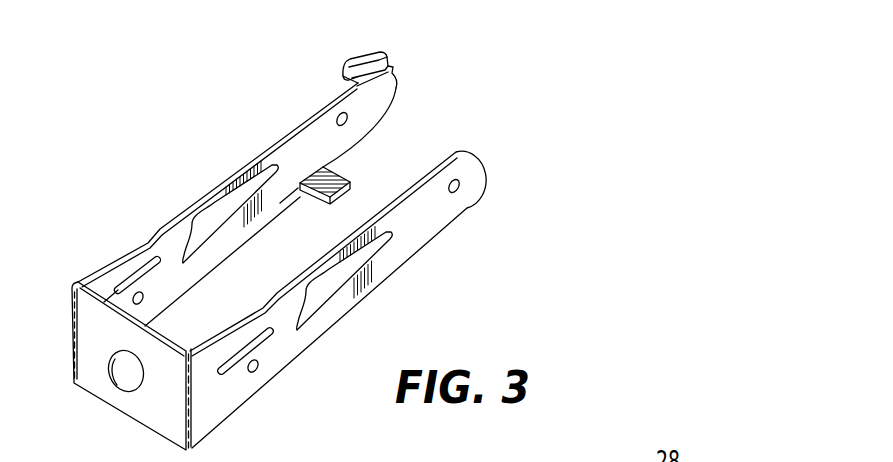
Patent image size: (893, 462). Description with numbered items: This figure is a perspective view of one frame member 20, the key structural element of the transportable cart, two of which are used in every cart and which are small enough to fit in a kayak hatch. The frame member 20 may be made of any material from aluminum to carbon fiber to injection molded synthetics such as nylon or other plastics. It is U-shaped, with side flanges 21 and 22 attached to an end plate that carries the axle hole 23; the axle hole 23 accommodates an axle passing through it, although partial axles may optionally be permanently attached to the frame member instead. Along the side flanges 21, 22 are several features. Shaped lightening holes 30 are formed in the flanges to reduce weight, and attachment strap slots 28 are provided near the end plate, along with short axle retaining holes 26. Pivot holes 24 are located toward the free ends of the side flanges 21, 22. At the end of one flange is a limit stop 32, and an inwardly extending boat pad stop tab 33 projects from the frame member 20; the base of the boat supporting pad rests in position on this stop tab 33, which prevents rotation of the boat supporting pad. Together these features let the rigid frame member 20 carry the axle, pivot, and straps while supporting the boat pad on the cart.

The frame member 20 is at (190, 125).
The side flange 21 is at (421, 230).
The side flange 22 is at (187, 205).
The axle hole 23 is at (128, 368).
The pivot hole 24 is at (341, 114).
The short axle retaining hole 26 is at (143, 300).
The attachment strap slot 28 is at (135, 268).
The shaped lightening hole 30 is at (220, 217).
The limit stop 32 is at (360, 55).
The boat pad stop tab 33 is at (349, 182).